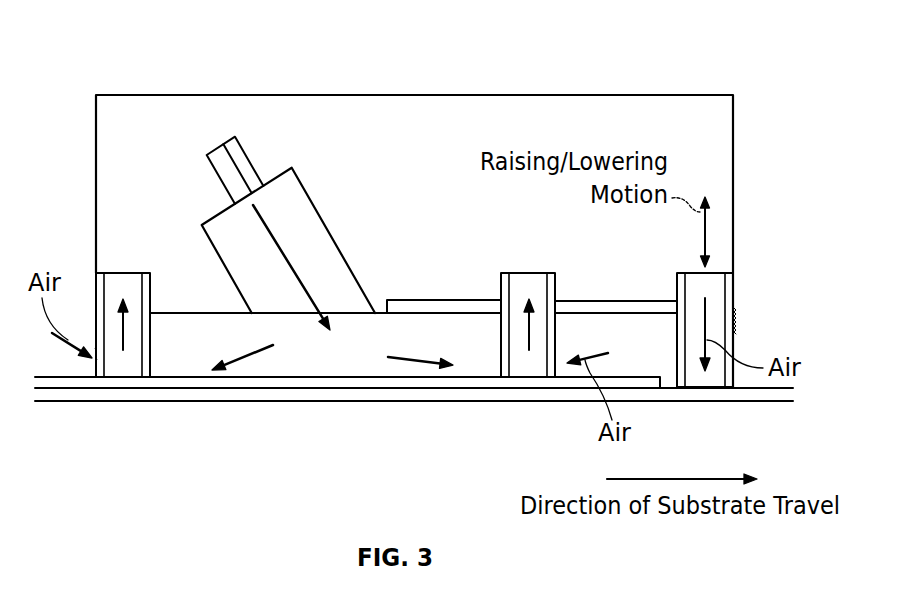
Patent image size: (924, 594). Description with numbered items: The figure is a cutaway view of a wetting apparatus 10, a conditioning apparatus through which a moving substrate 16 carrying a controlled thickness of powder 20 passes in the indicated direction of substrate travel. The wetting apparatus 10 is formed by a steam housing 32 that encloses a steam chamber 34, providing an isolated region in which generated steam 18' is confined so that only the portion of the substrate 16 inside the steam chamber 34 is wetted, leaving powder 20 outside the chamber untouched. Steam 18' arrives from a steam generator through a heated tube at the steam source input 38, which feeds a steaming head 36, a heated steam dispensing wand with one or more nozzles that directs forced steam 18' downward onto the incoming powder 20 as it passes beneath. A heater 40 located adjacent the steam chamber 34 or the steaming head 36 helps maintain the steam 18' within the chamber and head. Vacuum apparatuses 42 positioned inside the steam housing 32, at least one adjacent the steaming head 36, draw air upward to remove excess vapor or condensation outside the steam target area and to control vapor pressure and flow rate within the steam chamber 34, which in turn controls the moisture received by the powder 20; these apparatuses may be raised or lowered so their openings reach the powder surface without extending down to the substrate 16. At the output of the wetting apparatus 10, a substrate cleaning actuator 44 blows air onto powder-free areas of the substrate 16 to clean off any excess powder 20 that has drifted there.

The wetting apparatus 10 is at (674, 28).
The substrate 16 is at (492, 392).
The steam 18' is at (338, 331).
The powder 20 is at (640, 380).
The steam housing 32 is at (472, 95).
The steam chamber 34 is at (326, 363).
The steaming head 36 is at (305, 185).
The steam source input 38 is at (220, 147).
The heater 40 is at (472, 298).
The vacuum apparatus 42 is at (120, 287).
The substrate cleaning actuator 44 is at (735, 316).